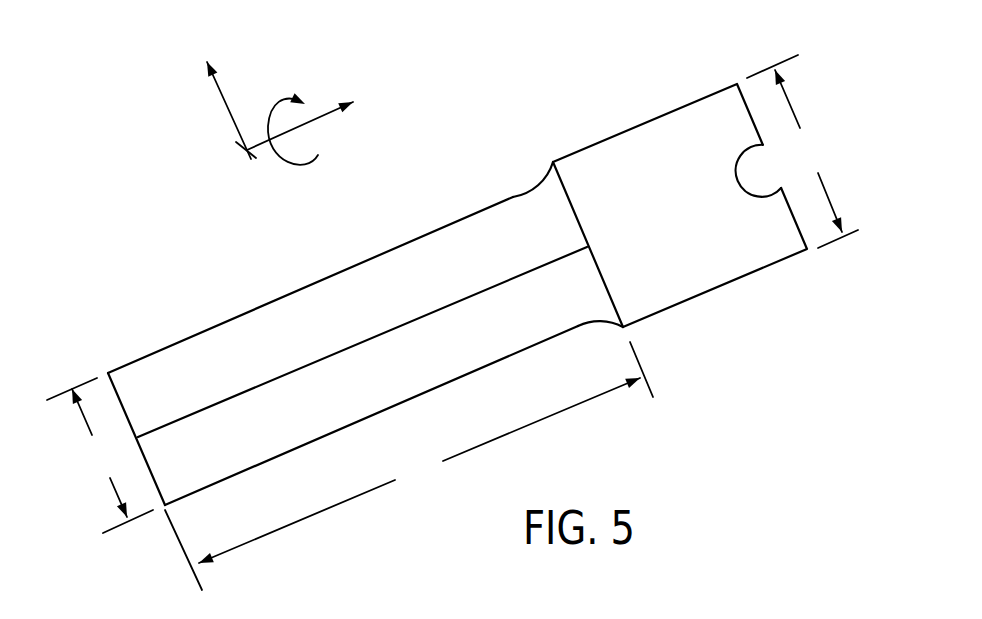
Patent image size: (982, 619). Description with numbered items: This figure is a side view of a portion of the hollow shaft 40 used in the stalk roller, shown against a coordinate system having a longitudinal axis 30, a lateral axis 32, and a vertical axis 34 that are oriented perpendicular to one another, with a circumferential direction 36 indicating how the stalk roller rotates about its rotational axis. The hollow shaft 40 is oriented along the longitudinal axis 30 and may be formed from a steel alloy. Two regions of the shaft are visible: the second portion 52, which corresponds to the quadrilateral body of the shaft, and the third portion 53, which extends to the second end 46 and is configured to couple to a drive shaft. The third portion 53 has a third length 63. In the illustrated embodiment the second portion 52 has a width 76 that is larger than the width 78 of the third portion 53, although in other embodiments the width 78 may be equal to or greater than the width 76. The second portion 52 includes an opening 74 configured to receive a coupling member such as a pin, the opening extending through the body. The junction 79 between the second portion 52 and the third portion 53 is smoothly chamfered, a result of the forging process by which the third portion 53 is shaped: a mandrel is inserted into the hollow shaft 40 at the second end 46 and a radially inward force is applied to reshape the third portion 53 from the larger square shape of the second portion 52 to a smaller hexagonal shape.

The longitudinal axis 30 is at (330, 113).
The lateral axis 32 is at (244, 160).
The vertical axis 34 is at (225, 103).
The circumferential direction 36 is at (277, 98).
The hollow shaft 40 is at (158, 232).
The second end 46 is at (125, 365).
The second portion 52 is at (640, 124).
The third portion 53 is at (315, 283).
The third length 63 is at (409, 466).
The opening 74 is at (750, 192).
The width of the second section 76 is at (802, 151).
The width of the third section 78 is at (100, 455).
The junction 79 is at (520, 170).